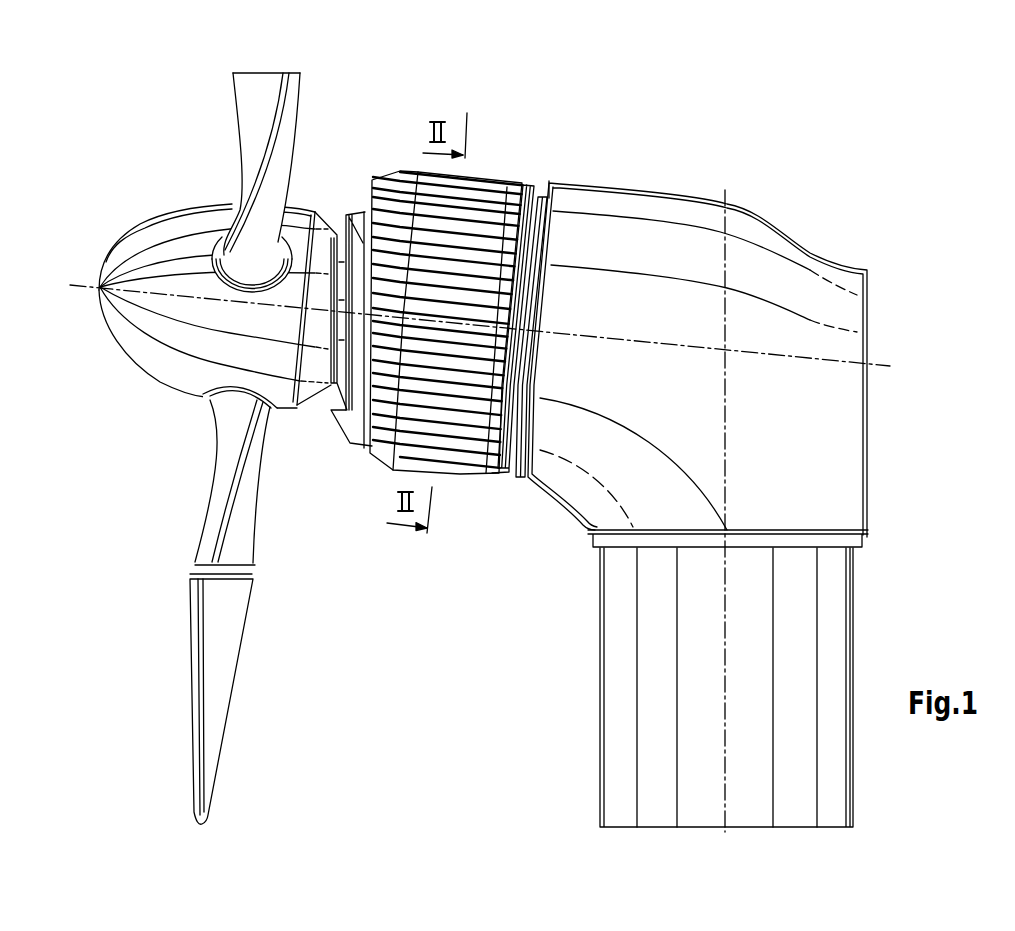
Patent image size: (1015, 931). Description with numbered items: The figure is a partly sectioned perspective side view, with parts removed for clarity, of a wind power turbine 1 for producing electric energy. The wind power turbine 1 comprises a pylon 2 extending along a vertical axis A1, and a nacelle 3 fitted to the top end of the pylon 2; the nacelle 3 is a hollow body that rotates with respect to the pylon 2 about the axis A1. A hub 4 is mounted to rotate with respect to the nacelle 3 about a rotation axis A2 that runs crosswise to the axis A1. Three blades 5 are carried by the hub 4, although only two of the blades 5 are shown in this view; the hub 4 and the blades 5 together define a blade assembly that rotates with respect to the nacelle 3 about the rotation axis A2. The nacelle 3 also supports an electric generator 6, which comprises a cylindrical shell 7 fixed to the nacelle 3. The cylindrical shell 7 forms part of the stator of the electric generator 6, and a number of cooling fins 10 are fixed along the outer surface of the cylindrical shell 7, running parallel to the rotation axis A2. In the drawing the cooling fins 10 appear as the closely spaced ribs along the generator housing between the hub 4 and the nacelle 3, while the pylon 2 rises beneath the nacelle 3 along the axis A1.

The wind power turbine 1 is at (881, 242).
The pylon 2 is at (822, 663).
The nacelle 3 is at (833, 503).
The hub 4 is at (181, 228).
The blades 5 is at (278, 146).
The electric generator 6 is at (531, 163).
The cylindrical shell 7 is at (358, 447).
The cooling fins 10 is at (473, 205).
The vertical axis A1 is at (728, 204).
The rotation axis A2 is at (82, 292).